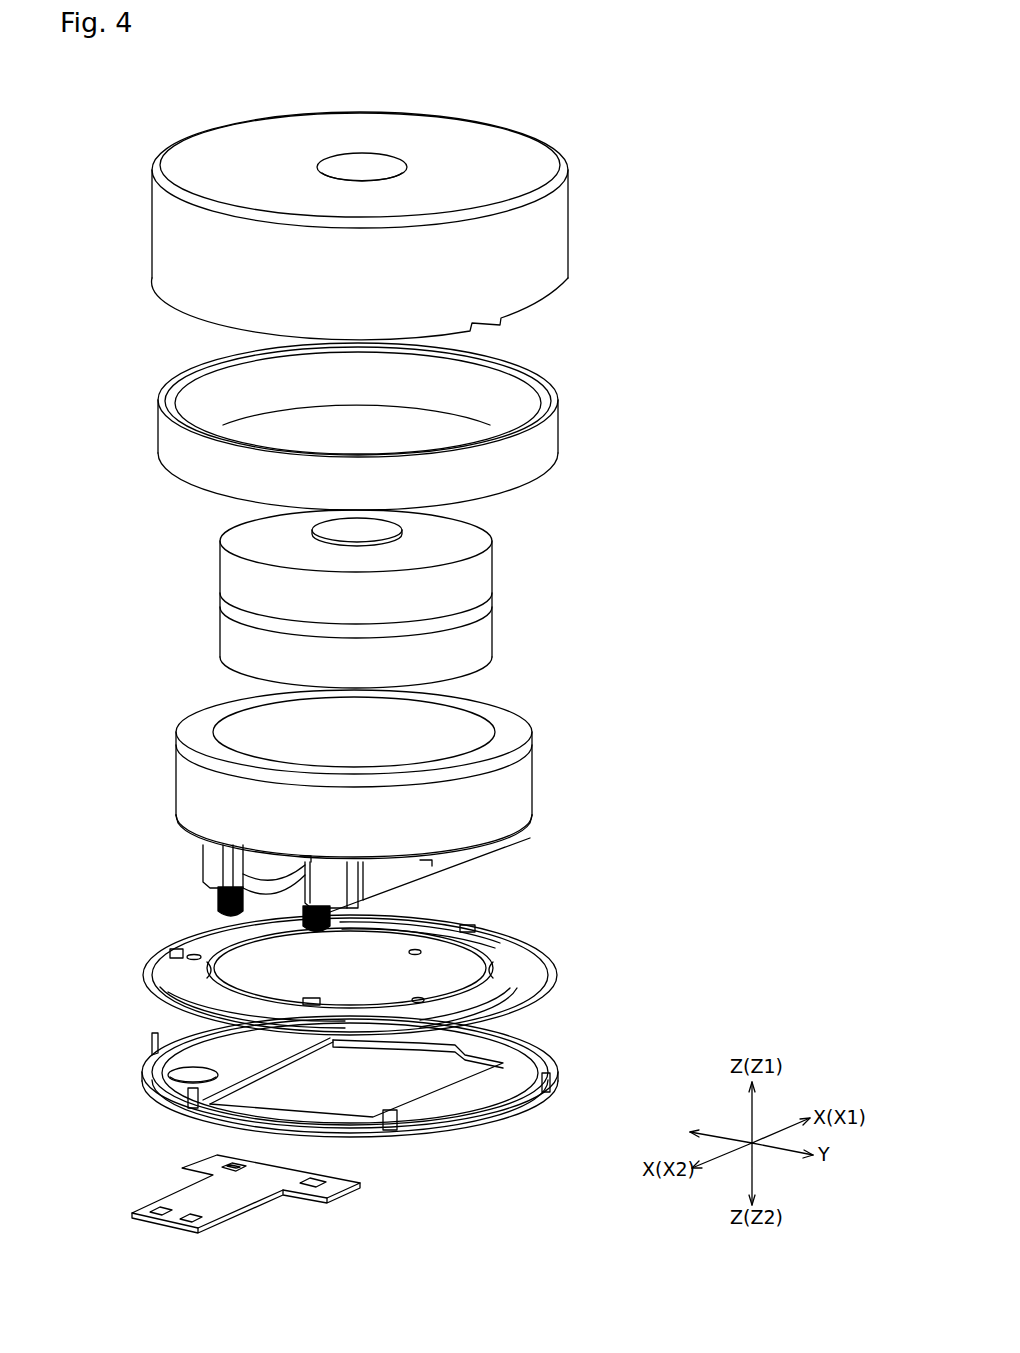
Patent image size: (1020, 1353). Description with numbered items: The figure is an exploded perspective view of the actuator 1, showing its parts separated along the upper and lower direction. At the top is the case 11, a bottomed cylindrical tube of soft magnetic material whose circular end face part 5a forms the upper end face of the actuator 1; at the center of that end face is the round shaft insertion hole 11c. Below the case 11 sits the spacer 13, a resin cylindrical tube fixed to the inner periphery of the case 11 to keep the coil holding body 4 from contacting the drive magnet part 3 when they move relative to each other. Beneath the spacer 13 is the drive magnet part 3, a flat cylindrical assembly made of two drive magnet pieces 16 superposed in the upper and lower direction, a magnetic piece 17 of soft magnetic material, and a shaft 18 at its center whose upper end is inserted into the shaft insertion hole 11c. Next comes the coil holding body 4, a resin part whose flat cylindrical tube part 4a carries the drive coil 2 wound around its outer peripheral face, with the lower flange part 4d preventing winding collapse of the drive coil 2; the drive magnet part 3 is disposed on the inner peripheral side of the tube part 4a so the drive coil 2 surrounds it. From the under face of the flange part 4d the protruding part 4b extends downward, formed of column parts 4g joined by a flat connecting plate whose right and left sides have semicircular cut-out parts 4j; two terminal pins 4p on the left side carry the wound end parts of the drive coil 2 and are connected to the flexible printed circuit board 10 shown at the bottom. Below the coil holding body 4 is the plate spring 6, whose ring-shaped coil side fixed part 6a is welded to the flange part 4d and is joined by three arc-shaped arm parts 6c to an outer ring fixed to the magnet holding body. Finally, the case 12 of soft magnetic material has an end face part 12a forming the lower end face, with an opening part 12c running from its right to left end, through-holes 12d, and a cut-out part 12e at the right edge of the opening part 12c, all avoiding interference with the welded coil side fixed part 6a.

The actuator 1 is at (688, 107).
The drive coil 2 is at (393, 828).
The drive magnet part 3 is at (399, 599).
The coil holding body 4 is at (217, 698).
The tube part 4a is at (517, 708).
The protruding part 4b is at (450, 868).
The flange part 4d is at (530, 822).
The column part 4g is at (203, 865).
The cut-out part 4j is at (273, 883).
The terminal pin 4p is at (223, 921).
The end face part 5a is at (460, 143).
The plate spring 6 is at (366, 975).
The coil side fixed part 6a is at (243, 940).
The arm part 6c is at (170, 1007).
The flexible printed circuit board 10 is at (253, 1203).
The case 11 is at (568, 233).
The shaft insertion hole 11c is at (360, 155).
The case 12 is at (368, 1076).
The end face part 12a is at (520, 1070).
The opening part 12c is at (290, 1065).
The through-hole 12d is at (185, 1072).
The cut-out part 12e is at (440, 1045).
The spacer 13 is at (558, 440).
The drive magnet piece 16 is at (493, 568).
The magnetic piece 17 is at (493, 596).
The shaft 18 is at (378, 525).